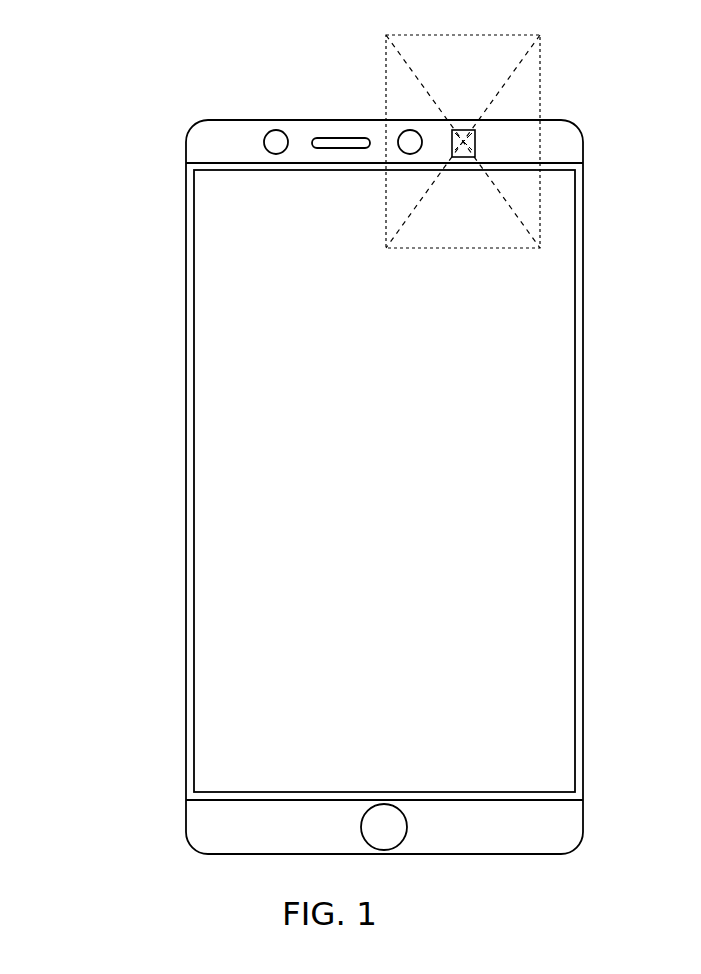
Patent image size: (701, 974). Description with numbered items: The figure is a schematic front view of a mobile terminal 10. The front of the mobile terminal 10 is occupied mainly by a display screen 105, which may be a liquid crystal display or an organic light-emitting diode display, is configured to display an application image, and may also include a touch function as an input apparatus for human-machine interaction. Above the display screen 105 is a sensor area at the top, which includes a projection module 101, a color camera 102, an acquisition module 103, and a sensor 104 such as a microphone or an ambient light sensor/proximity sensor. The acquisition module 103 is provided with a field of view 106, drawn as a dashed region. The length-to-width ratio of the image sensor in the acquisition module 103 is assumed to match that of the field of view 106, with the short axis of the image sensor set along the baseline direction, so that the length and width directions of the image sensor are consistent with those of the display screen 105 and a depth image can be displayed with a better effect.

The mobile terminal 10 is at (137, 140).
The projection module 101 is at (269, 131).
The color camera 102 is at (405, 153).
The acquisition module 103 is at (463, 130).
The sensor 104 is at (322, 137).
The display screen 105 is at (567, 432).
The field of view 106 is at (478, 248).